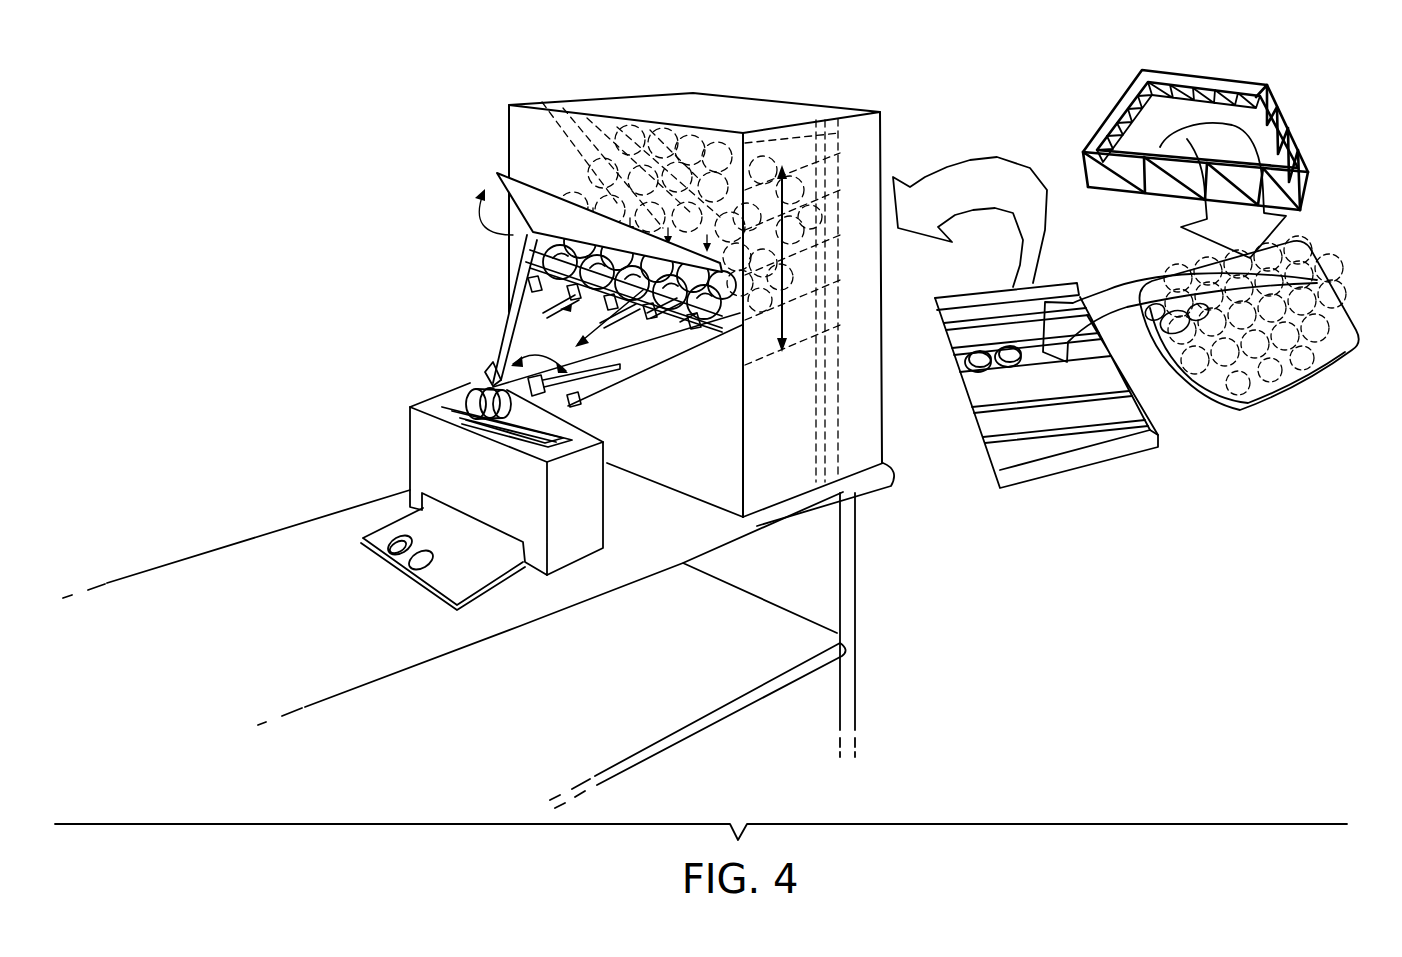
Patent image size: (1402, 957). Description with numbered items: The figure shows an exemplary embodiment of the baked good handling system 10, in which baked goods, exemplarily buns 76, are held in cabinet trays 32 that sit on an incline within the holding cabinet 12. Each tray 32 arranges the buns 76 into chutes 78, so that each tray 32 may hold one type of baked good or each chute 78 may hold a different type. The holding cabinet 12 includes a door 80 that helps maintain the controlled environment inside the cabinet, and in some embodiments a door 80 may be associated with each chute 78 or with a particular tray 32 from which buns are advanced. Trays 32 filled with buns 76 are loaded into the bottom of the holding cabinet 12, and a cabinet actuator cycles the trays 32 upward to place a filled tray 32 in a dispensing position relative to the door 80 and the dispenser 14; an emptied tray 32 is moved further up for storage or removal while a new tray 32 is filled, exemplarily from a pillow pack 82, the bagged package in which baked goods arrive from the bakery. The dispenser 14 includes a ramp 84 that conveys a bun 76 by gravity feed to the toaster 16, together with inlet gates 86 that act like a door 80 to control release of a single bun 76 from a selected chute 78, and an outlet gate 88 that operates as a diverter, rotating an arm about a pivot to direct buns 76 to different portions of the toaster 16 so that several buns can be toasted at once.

The baked good handling system 10 is at (758, 75).
The holding cabinet 12 is at (616, 108).
The dispenser 14 is at (432, 280).
The toaster 16 is at (440, 452).
The cabinet tray 32 is at (775, 237).
The bun 76 is at (660, 270).
The chute 78 is at (690, 200).
The door 80 is at (530, 186).
The pillow pack 82 is at (1292, 377).
The ramp 84 is at (498, 355).
The inlet gate 86 is at (537, 312).
The outlet gate 88 is at (577, 390).